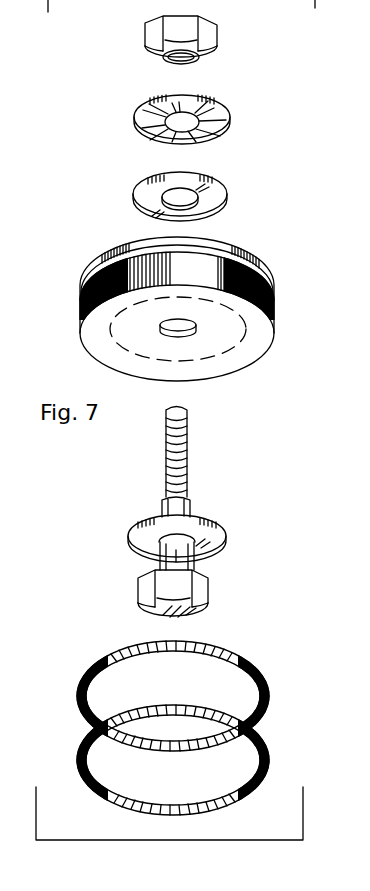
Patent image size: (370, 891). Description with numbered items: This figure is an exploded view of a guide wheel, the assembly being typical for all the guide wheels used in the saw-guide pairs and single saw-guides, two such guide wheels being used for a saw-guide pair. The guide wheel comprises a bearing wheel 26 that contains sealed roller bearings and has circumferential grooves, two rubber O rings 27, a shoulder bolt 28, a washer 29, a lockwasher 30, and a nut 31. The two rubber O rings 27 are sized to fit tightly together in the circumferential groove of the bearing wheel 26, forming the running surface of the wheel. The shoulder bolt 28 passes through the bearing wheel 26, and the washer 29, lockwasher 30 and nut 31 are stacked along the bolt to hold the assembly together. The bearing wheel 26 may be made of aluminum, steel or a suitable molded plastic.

The bearing wheel 26 is at (227, 372).
The rubber O ring 27 is at (256, 667).
The shoulder bolt 28 is at (209, 597).
The washer 29 is at (228, 197).
The lockwasher 30 is at (230, 109).
The nut 31 is at (217, 43).